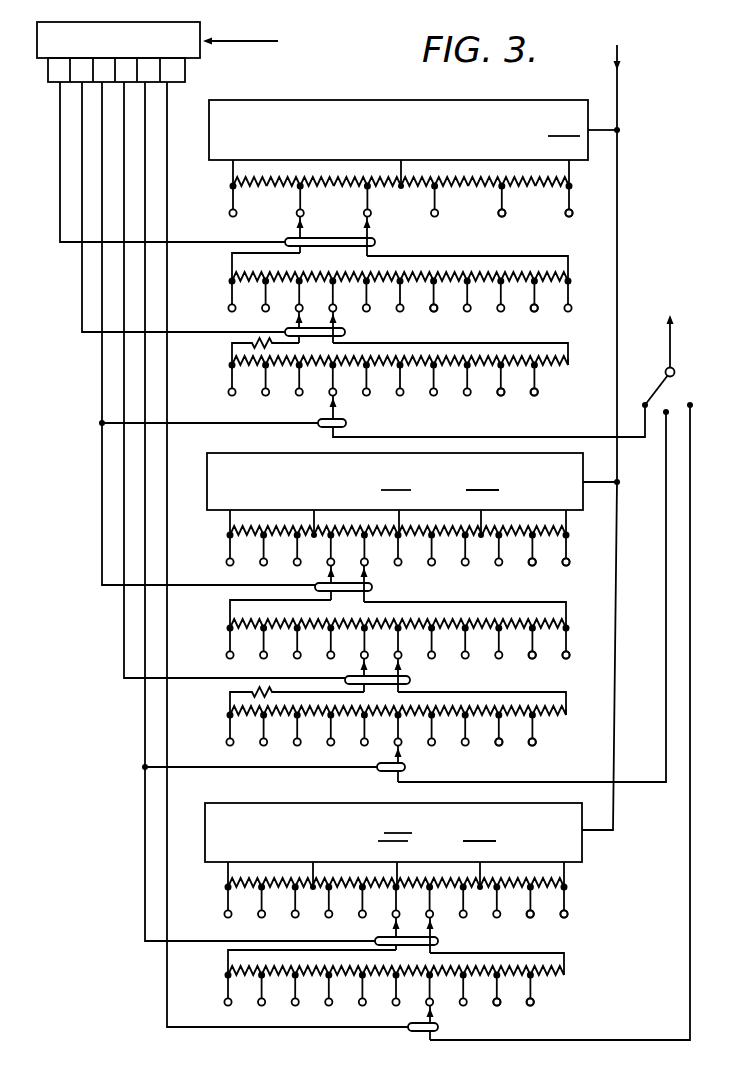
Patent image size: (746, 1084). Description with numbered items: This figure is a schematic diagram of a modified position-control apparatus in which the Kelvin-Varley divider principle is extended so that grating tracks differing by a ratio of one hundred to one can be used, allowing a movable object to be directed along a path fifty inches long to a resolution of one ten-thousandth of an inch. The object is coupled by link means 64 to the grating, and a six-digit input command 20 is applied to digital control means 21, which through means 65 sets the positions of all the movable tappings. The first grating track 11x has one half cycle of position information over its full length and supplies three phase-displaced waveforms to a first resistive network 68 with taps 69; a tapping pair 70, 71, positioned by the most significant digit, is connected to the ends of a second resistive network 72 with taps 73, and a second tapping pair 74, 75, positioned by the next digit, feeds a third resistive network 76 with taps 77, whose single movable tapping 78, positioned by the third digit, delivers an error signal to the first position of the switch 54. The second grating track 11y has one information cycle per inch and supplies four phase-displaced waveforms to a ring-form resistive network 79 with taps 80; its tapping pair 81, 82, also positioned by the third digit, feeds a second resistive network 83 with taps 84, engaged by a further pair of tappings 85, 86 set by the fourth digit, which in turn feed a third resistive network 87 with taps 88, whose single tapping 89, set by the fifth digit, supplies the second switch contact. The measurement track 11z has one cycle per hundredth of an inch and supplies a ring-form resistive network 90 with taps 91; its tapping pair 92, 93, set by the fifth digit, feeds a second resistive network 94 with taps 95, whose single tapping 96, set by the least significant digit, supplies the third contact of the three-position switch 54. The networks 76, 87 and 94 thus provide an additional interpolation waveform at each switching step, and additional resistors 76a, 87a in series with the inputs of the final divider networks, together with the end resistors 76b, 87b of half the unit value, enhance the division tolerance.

The input command 20 is at (247, 44).
The digital control means 21 is at (200, 60).
The control means for tapping position 65 is at (87, 336).
The link means 64 is at (620, 176).
The first grating track 11x is at (366, 100).
The first resistive network 68 is at (478, 189).
The taps 69 is at (504, 216).
The movable tapping 70 is at (304, 222).
The movable tapping 71 is at (374, 222).
The second resistive network 72 is at (243, 277).
The taps 73 is at (527, 312).
The movable tapping 74 is at (296, 321).
The movable tapping 75 is at (338, 318).
The third resistive network 76 is at (244, 362).
The additional resistor 76a is at (246, 333).
The end resistor 76b is at (568, 372).
The taps 77 is at (499, 396).
The single movable tapping 78 is at (338, 411).
The switch 54 is at (660, 382).
The second grating track 11y is at (207, 462).
The ring-form resistive network 79 is at (245, 534).
The taps 80 is at (557, 575).
The tapping 81 is at (325, 577).
The tapping 82 is at (369, 578).
The second resistive network 83 is at (244, 627).
The taps 84 is at (534, 659).
The tapping 85 is at (358, 668).
The tapping 86 is at (404, 672).
The third resistive network 87 is at (245, 713).
The additional resistor 87a is at (252, 677).
The end resistor 87b is at (566, 721).
The taps 88 is at (525, 756).
The single movable tapping 89 is at (406, 757).
The measurement track 11z is at (206, 811).
The ring-form resistive network 90 is at (242, 886).
The taps 91 is at (532, 918).
The movable tapping 92 is at (391, 928).
The movable tapping 93 is at (434, 929).
The second resistive network 94 is at (240, 974).
The taps 95 is at (499, 1006).
The single movable tapping 96 is at (435, 1017).